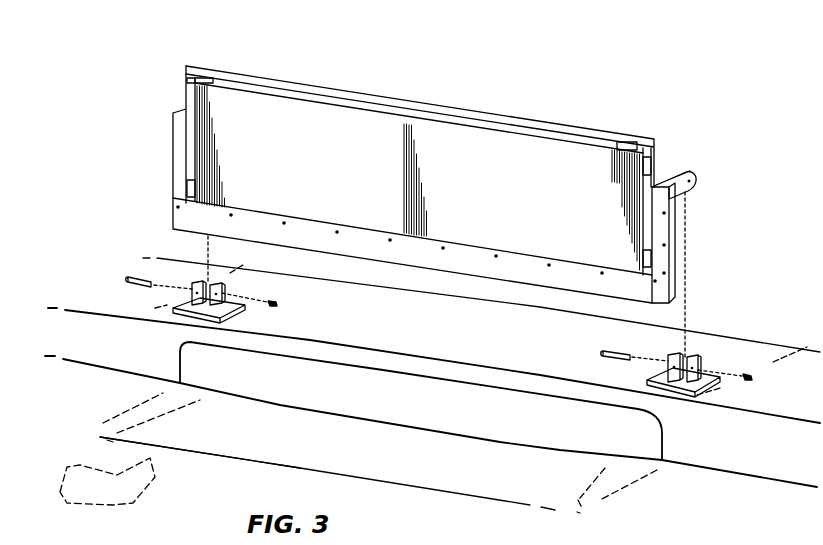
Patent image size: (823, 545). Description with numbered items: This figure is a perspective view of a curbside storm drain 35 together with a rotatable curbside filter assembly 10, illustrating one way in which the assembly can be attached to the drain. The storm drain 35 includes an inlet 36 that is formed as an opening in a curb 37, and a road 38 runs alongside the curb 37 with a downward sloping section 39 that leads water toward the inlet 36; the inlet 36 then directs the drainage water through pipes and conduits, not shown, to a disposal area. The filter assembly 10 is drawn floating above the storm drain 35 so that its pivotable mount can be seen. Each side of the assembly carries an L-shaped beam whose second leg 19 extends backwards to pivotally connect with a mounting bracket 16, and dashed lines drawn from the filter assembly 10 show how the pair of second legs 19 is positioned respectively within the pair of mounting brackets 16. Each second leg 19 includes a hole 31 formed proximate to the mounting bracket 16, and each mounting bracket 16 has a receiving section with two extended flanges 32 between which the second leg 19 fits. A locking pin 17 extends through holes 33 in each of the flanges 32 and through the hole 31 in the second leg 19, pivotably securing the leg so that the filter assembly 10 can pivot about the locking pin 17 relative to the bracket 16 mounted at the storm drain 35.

The curbside filter assembly 10 is at (357, 60).
The mounting bracket 16 is at (168, 234).
The locking pin 17 is at (620, 352).
The second leg 19 is at (658, 184).
The hole 31 is at (693, 184).
The extended flanges 32 is at (198, 284).
The holes 33 is at (277, 298).
The curbside storm drain 35 is at (470, 472).
The inlet 36 is at (382, 402).
The curb 37 is at (78, 324).
The road 38 is at (107, 479).
The downward sloping section 39 is at (258, 456).